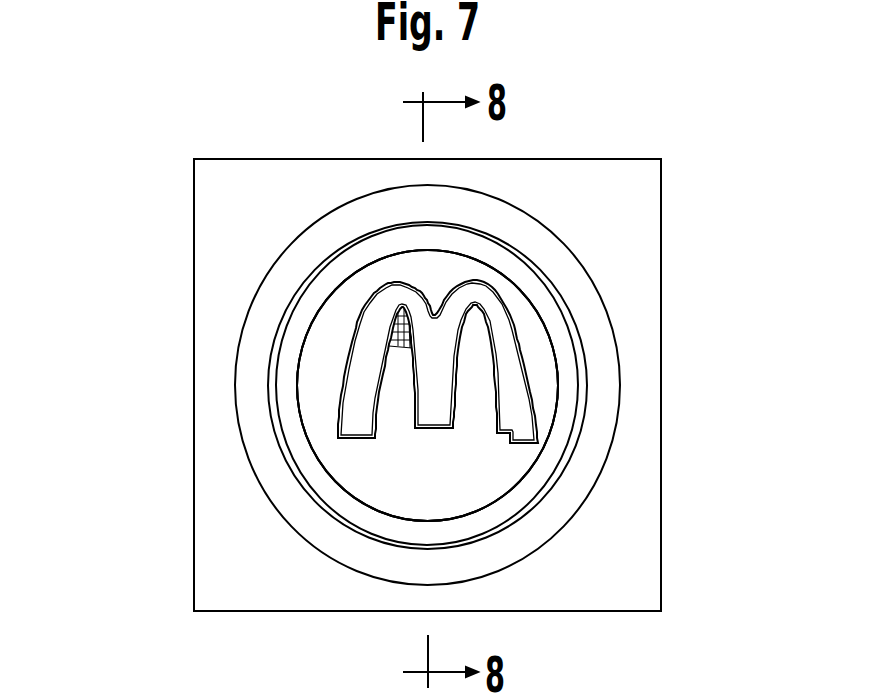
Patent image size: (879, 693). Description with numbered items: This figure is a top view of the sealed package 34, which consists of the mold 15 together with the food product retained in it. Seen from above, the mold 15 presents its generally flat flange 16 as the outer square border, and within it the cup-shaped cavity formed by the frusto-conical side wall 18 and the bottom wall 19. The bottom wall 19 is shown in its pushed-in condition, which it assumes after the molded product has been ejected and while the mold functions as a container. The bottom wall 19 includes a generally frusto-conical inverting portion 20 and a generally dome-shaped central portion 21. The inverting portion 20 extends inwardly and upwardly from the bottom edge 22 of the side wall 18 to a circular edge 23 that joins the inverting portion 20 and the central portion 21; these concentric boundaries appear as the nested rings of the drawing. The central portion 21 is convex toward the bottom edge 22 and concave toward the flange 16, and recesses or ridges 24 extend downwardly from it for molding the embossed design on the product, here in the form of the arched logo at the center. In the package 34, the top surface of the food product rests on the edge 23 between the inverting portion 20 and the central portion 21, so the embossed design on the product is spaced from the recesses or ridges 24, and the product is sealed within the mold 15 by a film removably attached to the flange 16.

The mold 15 is at (280, 272).
The flange 16 is at (640, 537).
The side wall 18 is at (603, 400).
The bottom wall 19 is at (380, 482).
The inverting portion 20 is at (558, 445).
The central portion 21 is at (338, 453).
The bottom edge 22 is at (542, 268).
The circular edge 23 is at (357, 270).
The recesses or ridges 24 is at (522, 335).
The sealed package 34 is at (172, 363).